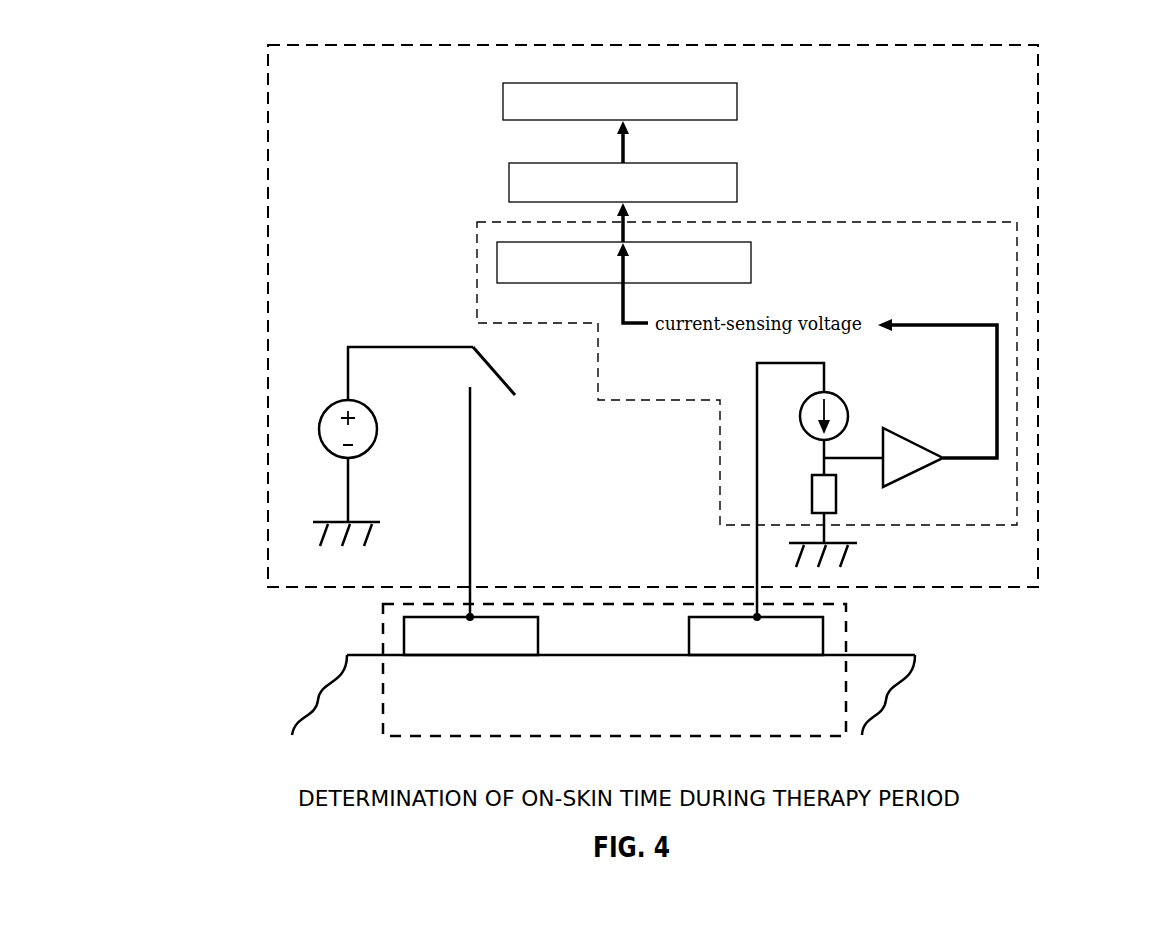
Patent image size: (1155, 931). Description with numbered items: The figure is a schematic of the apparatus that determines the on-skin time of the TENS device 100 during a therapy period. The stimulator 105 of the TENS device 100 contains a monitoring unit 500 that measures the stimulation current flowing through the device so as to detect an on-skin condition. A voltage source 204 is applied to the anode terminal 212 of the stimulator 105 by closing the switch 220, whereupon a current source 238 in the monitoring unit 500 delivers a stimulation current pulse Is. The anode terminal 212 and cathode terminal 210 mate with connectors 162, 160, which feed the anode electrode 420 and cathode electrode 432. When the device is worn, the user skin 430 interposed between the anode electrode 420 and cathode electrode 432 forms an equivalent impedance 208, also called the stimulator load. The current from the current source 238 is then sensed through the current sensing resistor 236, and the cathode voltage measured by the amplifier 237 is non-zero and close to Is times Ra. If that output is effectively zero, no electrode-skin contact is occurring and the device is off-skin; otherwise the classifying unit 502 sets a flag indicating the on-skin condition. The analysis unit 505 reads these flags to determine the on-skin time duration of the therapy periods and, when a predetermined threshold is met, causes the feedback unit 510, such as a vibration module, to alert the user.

The TENS device 100 is at (134, 114).
The stimulator 105 is at (1038, 587).
The monitoring unit 500 is at (1017, 293).
The feedback unit 510 is at (738, 101).
The analysis unit 505 is at (738, 179).
The classifying unit 502 is at (752, 264).
The voltage source 204 is at (332, 418).
The switch 220 is at (488, 393).
The anode terminal 212 is at (527, 550).
The cathode terminal 210 is at (683, 550).
The current source 238 is at (833, 407).
The current sensing resistor 236 is at (827, 494).
The amplifier 237 is at (900, 463).
The equivalent impedance 208 is at (846, 695).
The user skin 430 is at (630, 698).
The anode electrode 420 is at (417, 635).
The cathode electrode 432 is at (800, 635).
The connector 162 is at (468, 620).
The connector 160 is at (755, 620).